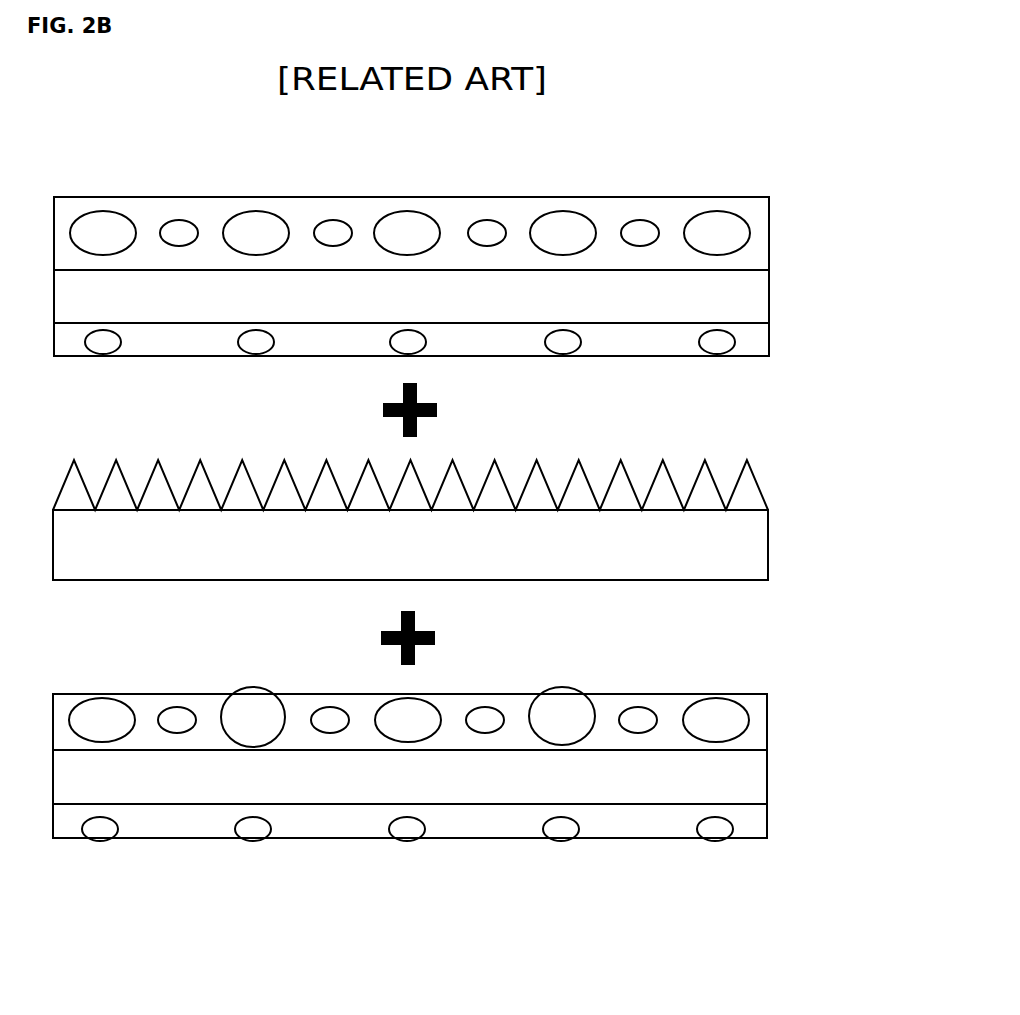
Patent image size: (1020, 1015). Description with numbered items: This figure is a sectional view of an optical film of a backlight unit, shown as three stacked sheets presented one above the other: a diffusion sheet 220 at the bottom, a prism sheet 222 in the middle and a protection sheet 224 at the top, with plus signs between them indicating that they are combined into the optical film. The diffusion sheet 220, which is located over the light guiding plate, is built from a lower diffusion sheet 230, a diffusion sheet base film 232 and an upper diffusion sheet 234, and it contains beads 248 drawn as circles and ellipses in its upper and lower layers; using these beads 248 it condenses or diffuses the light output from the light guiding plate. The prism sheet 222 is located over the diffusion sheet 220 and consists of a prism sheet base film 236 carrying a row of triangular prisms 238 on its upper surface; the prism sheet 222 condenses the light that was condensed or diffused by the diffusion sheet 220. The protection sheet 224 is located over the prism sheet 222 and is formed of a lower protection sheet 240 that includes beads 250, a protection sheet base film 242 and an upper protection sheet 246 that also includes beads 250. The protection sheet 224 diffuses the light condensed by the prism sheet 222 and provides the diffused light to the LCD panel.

The diffusion sheet 220 is at (478, 744).
The prism sheet 222 is at (472, 492).
The protection sheet 224 is at (478, 252).
The lower diffusion sheet 230 is at (757, 818).
The diffusion sheet base film 232 is at (760, 773).
The upper diffusion sheet 234 is at (760, 708).
The prism sheet base film 236 is at (755, 547).
The prisms 238 is at (748, 490).
The lower protection sheet 240 is at (632, 353).
The protection sheet base film 242 is at (760, 297).
The upper protection sheet 246 is at (762, 219).
The beads 248 is at (562, 693).
The beads 250 is at (407, 213).